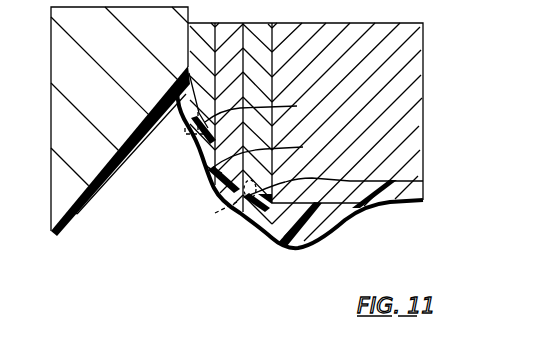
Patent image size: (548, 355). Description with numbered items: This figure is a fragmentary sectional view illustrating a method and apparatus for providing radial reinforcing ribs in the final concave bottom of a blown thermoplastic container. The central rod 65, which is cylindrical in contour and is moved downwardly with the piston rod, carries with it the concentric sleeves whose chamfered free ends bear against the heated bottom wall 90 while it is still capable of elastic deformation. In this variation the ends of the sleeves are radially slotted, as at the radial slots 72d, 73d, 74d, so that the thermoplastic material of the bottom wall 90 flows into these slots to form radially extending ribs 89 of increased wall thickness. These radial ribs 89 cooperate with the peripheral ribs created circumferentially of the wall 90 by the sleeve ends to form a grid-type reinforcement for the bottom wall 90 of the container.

The central rod 65 is at (413, 117).
The radial slot 72d is at (335, 180).
The radial slot 73d is at (274, 151).
The radial slot 74d is at (268, 108).
The radial ribs 89 is at (200, 167).
The bottom wall 90 is at (185, 183).